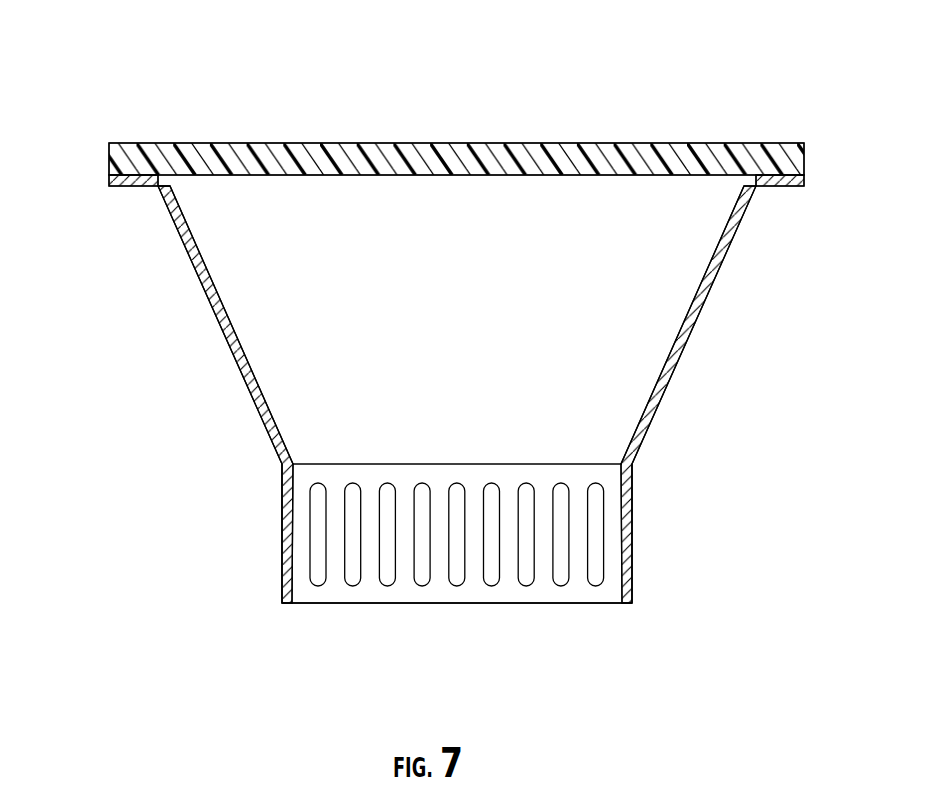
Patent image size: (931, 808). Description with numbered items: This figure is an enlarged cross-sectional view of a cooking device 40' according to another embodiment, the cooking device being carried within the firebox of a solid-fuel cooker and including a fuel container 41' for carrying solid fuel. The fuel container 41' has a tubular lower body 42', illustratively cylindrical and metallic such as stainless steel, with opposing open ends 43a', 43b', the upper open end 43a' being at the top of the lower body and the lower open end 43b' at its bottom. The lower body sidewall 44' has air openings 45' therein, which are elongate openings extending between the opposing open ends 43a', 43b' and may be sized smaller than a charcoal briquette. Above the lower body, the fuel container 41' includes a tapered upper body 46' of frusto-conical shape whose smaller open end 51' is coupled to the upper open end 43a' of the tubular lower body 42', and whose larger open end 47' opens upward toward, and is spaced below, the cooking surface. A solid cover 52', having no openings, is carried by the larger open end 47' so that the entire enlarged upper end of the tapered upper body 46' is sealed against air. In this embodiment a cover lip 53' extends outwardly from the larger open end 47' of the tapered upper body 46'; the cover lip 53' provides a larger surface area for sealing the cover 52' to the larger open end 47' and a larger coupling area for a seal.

The cooking device 40' is at (449, 362).
The fuel container 41' is at (384, 532).
The tubular lower body 42' is at (251, 533).
The upper open end 43a' is at (645, 533).
The lower open end 43b' is at (473, 631).
The lower body sidewall 44' is at (299, 578).
The air openings 45' is at (474, 582).
The tapered upper body 46' is at (203, 394).
The larger open end 47' is at (141, 222).
The smaller open end 51' is at (688, 394).
The solid cover 52' is at (427, 138).
The cover lip 53' is at (449, 226).